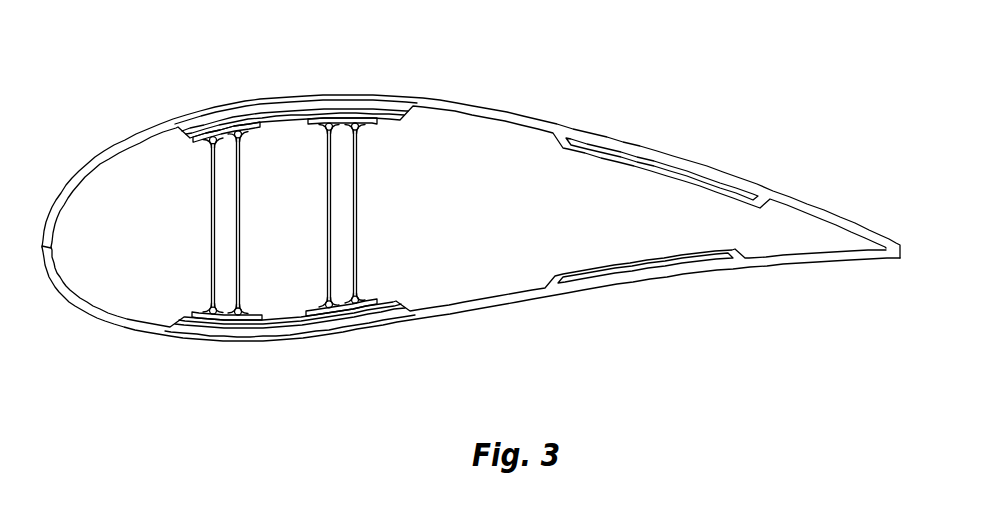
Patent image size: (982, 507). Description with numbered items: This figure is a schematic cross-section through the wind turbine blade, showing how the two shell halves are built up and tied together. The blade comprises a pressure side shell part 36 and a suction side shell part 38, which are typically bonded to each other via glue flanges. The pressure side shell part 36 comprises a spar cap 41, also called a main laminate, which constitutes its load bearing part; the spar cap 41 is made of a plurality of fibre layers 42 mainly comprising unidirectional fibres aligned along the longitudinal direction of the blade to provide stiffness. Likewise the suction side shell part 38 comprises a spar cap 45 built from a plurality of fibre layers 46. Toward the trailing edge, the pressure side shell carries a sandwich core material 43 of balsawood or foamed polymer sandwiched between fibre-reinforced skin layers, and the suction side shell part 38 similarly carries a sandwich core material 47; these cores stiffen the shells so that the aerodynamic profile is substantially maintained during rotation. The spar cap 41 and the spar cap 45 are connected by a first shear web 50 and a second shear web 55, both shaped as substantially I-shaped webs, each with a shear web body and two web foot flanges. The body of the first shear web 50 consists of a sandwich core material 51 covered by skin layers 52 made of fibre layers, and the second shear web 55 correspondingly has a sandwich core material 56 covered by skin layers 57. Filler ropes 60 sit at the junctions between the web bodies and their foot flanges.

The pressure side shell part 36 is at (518, 305).
The suction side shell part 38 is at (505, 112).
The spar cap 41 is at (367, 330).
The fibre layers 42 is at (285, 327).
The sandwich core material 43 is at (659, 285).
The spar cap 45 is at (257, 100).
The fibre layers 46 is at (355, 114).
The sandwich core material 47 is at (658, 152).
The first shear web 50 is at (243, 221).
The sandwich core material 51 is at (243, 214).
The skin layers 52 is at (242, 175).
The second shear web 55 is at (365, 217).
The sandwich core material of second shear web 56 is at (360, 208).
The skin layers of second shear web 57 is at (359, 188).
The filler ropes 60 is at (326, 131).